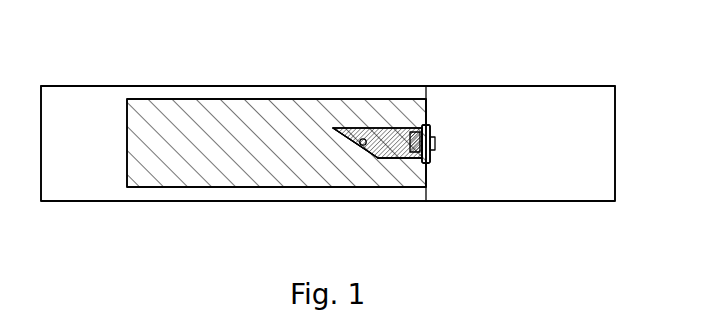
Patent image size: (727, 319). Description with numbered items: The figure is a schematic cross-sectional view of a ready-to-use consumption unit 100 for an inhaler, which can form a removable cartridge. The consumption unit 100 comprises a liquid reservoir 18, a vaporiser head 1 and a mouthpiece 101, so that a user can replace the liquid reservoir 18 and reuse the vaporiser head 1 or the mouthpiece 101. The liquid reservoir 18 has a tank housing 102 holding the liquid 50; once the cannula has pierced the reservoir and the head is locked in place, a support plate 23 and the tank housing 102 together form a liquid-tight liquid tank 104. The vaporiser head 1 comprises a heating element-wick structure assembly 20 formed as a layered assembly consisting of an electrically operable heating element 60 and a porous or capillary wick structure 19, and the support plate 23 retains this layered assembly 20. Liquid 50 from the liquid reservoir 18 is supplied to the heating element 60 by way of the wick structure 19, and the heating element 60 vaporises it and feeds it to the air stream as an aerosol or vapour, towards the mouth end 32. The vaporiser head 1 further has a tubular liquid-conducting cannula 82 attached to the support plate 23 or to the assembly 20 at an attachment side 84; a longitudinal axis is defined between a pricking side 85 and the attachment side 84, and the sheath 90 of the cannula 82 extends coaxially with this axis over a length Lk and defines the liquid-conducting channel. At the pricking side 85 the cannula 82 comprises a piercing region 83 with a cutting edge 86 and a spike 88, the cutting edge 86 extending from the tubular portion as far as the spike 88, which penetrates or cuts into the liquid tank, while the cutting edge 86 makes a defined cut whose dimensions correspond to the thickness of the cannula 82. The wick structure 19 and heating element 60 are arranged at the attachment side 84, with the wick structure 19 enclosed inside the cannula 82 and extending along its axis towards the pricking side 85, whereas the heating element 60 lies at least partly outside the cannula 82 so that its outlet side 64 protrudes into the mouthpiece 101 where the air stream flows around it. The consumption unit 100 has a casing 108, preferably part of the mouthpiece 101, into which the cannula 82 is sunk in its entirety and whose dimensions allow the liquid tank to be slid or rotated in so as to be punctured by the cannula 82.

The vaporiser head 1 is at (412, 121).
The liquid reservoir 18 is at (170, 167).
The wick structure 19 is at (410, 152).
The heating element-wick structure assembly 20 is at (444, 161).
The support plate 23 is at (433, 125).
The mouth end 32 is at (616, 125).
The liquid 50 is at (217, 146).
The heating element 60 is at (431, 164).
The outlet side 64 is at (436, 143).
The cannula 82 is at (378, 157).
The piercing region 83 is at (337, 111).
The attachment side 84 is at (418, 119).
The pricking side 85 is at (359, 145).
The cutting edge 86 is at (348, 163).
The spike 88 is at (333, 128).
The sheath 90 is at (400, 158).
The consumption unit 100 is at (160, 222).
The mouthpiece 101 is at (558, 192).
The tank housing 102 is at (198, 99).
The liquid-tight liquid tank 104 is at (431, 95).
The casing 108 is at (135, 86).
The length Lk is at (377, 129).